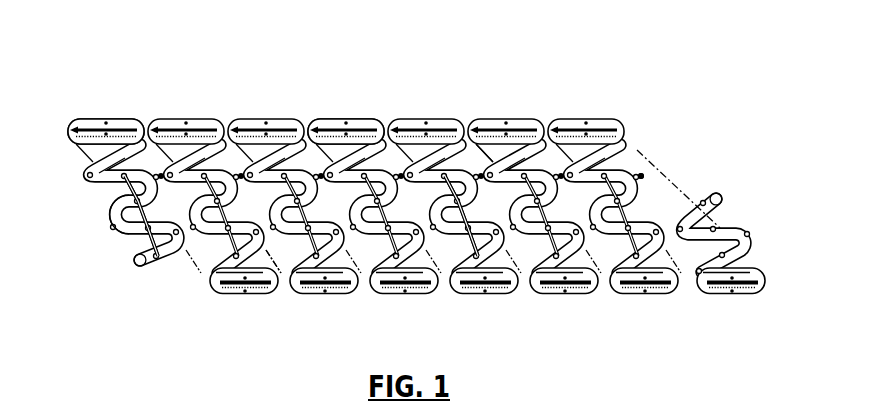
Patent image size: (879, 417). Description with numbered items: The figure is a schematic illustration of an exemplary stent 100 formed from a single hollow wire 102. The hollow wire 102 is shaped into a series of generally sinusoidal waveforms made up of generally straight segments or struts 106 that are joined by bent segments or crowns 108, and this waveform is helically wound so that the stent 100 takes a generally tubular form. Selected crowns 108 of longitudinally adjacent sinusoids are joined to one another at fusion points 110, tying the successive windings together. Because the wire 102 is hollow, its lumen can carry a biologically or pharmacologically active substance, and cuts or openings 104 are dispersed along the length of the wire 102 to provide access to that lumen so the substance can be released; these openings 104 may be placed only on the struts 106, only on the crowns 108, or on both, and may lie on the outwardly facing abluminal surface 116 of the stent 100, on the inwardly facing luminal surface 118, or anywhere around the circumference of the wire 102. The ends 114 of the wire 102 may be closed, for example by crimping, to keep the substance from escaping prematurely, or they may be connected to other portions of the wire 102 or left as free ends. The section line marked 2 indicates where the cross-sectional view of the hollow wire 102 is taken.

The stent 100 is at (415, 85).
The hollow wire 102 is at (120, 116).
The openings 104 is at (118, 183).
The struts 106 is at (250, 252).
The crowns 108 is at (123, 238).
The fusion points 110 is at (352, 127).
The ends 114 is at (140, 265).
The abluminal surface 116 is at (635, 163).
The luminal surface 118 is at (467, 157).
The section line 2- 2 is at (683, 186).